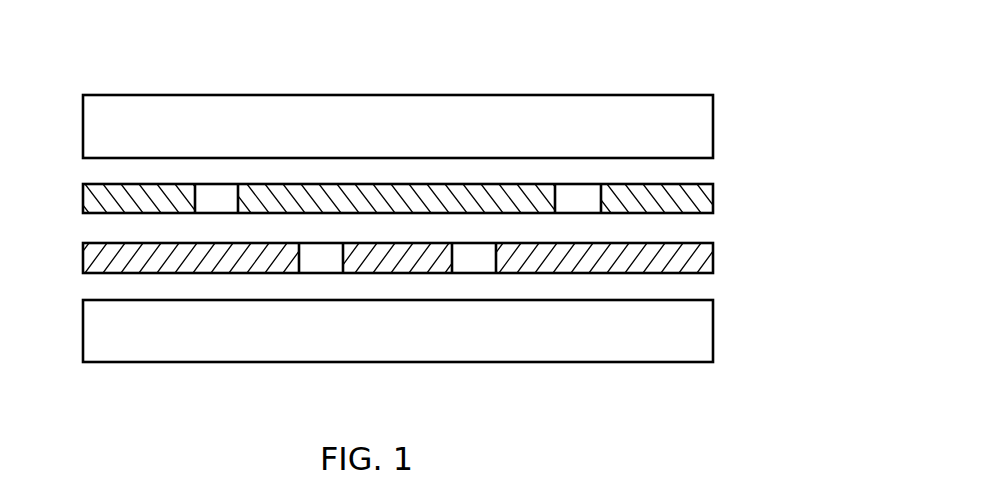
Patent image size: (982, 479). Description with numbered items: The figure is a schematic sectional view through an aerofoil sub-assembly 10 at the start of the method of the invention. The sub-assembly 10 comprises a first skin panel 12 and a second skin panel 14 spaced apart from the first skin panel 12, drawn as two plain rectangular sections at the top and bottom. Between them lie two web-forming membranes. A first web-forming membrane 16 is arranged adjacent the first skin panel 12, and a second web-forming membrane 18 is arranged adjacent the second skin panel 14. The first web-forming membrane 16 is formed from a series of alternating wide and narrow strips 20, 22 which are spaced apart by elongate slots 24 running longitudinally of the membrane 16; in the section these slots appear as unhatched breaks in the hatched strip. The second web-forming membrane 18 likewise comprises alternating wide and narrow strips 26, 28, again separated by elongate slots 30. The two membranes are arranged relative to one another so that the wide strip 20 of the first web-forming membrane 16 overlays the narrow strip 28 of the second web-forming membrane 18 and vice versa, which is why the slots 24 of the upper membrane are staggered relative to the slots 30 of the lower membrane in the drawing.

The aerofoil sub-assembly 10 is at (625, 68).
The first skin panel 12 is at (215, 94).
The second skin panel 14 is at (215, 363).
The first web-forming membrane 16 is at (390, 183).
The second web-forming membrane 18 is at (381, 265).
The wide strip 20 is at (487, 193).
The narrow strip 22 is at (90, 193).
The elongate slot 24 is at (220, 193).
The wide strip 26 is at (90, 262).
The narrow strip 28 is at (442, 265).
The elongate slot 30 is at (313, 265).